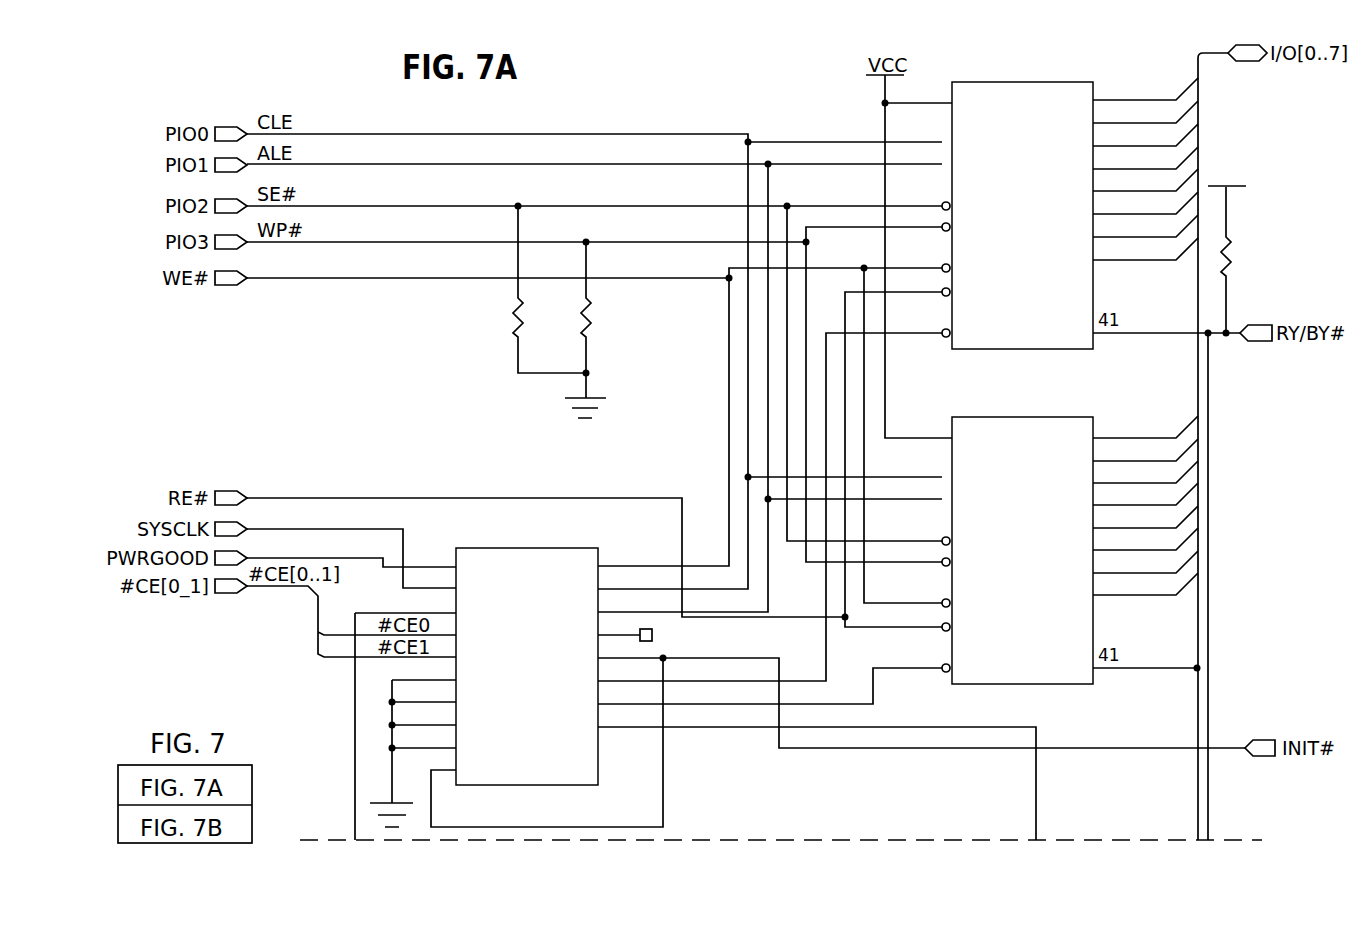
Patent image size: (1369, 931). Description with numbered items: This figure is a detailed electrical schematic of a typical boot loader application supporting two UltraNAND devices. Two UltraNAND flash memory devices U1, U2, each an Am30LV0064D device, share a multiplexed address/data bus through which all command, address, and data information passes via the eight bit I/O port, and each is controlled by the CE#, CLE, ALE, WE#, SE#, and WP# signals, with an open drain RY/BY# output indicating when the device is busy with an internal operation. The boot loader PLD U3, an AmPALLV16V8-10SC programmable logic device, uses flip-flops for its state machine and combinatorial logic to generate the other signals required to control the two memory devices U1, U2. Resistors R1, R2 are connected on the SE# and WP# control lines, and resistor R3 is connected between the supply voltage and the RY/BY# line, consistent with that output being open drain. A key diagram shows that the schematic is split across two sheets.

The flash memory device Am30LV0064D U1 is at (1062, 216).
The flash memory device Am30LV0064D U2 is at (1062, 551).
The programmable logic device AmPALLV16VB-10SC U3 is at (531, 668).
The pull-up resistor 10K R1 is at (549, 289).
The pull-up resistor 10K R2 is at (599, 330).
The pull-up resistor 10K R3 is at (1241, 248).